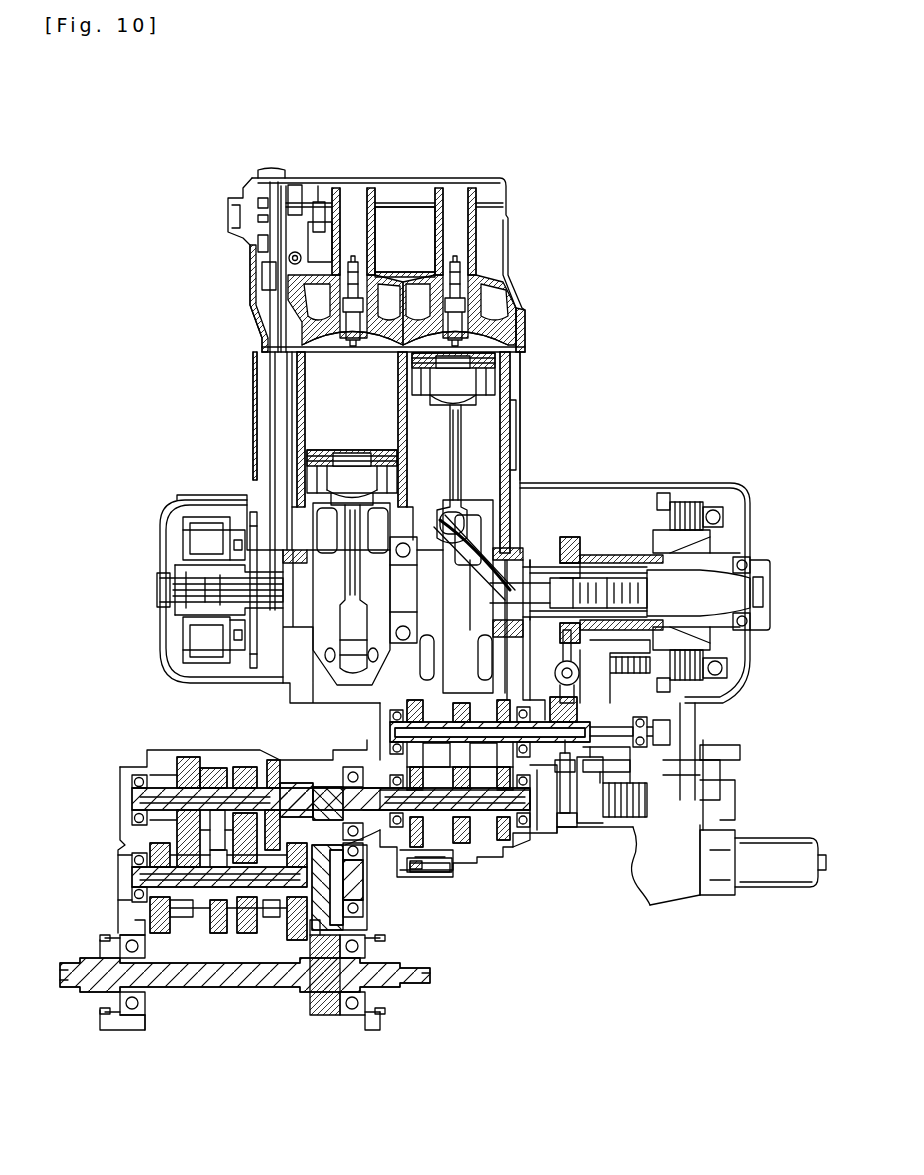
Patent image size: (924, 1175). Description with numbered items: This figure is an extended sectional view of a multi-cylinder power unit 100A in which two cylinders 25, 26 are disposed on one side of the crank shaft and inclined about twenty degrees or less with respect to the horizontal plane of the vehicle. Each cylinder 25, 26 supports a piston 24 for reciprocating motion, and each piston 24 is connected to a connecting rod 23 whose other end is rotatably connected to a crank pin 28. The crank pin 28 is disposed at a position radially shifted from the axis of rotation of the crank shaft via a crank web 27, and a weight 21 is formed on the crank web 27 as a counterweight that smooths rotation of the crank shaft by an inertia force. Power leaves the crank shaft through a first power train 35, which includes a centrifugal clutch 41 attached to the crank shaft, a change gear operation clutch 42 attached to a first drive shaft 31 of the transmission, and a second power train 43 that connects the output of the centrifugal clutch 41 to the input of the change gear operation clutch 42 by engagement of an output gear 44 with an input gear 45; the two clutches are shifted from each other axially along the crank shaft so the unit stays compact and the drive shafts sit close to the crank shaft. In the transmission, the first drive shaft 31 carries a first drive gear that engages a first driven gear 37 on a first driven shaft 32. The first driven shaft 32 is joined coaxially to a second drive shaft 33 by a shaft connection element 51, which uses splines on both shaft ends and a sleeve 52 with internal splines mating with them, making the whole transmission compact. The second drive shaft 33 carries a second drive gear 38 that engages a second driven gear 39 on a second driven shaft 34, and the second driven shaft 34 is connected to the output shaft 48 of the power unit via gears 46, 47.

The power unit 100A is at (592, 230).
The weight 21 is at (320, 520).
The connecting rod 23 is at (450, 435).
The piston 24 is at (330, 455).
The cylinder 25 is at (300, 410).
The cylinder 26 is at (515, 428).
The crank web 27 is at (428, 545).
The crank pin 28 is at (458, 505).
The first drive shaft 31 is at (445, 722).
The first driven shaft 32 is at (475, 835).
The second drive shaft 33 is at (168, 788).
The second driven shaft 34 is at (135, 882).
The first power train 35 is at (612, 520).
The first driven gear 37 is at (505, 857).
The second drive gear 38 is at (245, 767).
The second driven gear 39 is at (215, 933).
The centrifugal clutch 41 is at (690, 500).
The change gear operation clutch 42 is at (620, 825).
The second power train 43 is at (553, 665).
The output gear 44 is at (572, 537).
The input gear 45 is at (567, 830).
The gear 46 is at (370, 900).
The gear 47 is at (322, 1018).
The output shaft 48 is at (230, 987).
The shaft connection element 51 is at (322, 770).
The sleeve 52 is at (413, 870).